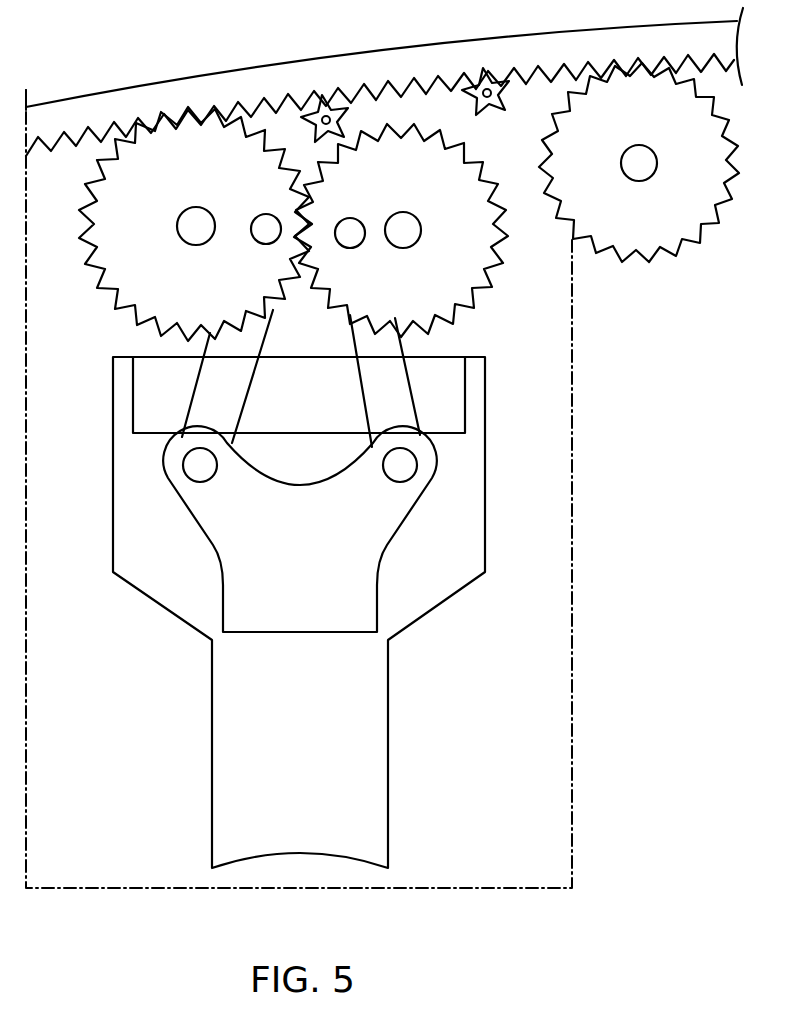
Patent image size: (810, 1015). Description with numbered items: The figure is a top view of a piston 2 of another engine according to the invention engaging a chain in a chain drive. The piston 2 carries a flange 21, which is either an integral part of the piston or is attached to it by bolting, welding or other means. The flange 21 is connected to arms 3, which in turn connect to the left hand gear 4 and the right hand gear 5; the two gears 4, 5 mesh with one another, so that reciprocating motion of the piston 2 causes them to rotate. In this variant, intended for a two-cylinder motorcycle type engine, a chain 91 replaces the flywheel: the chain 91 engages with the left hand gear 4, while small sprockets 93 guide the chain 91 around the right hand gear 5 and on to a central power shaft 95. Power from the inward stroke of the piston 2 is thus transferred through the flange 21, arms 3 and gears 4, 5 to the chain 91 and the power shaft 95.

The chain 91 is at (332, 72).
The small sprocket 93 is at (354, 119).
The central power shaft 95 is at (697, 132).
The left hand gear 4 is at (132, 245).
The right hand gear 5 is at (485, 238).
The arm 3 is at (212, 393).
The piston 2 is at (503, 518).
The flange 21 is at (370, 548).